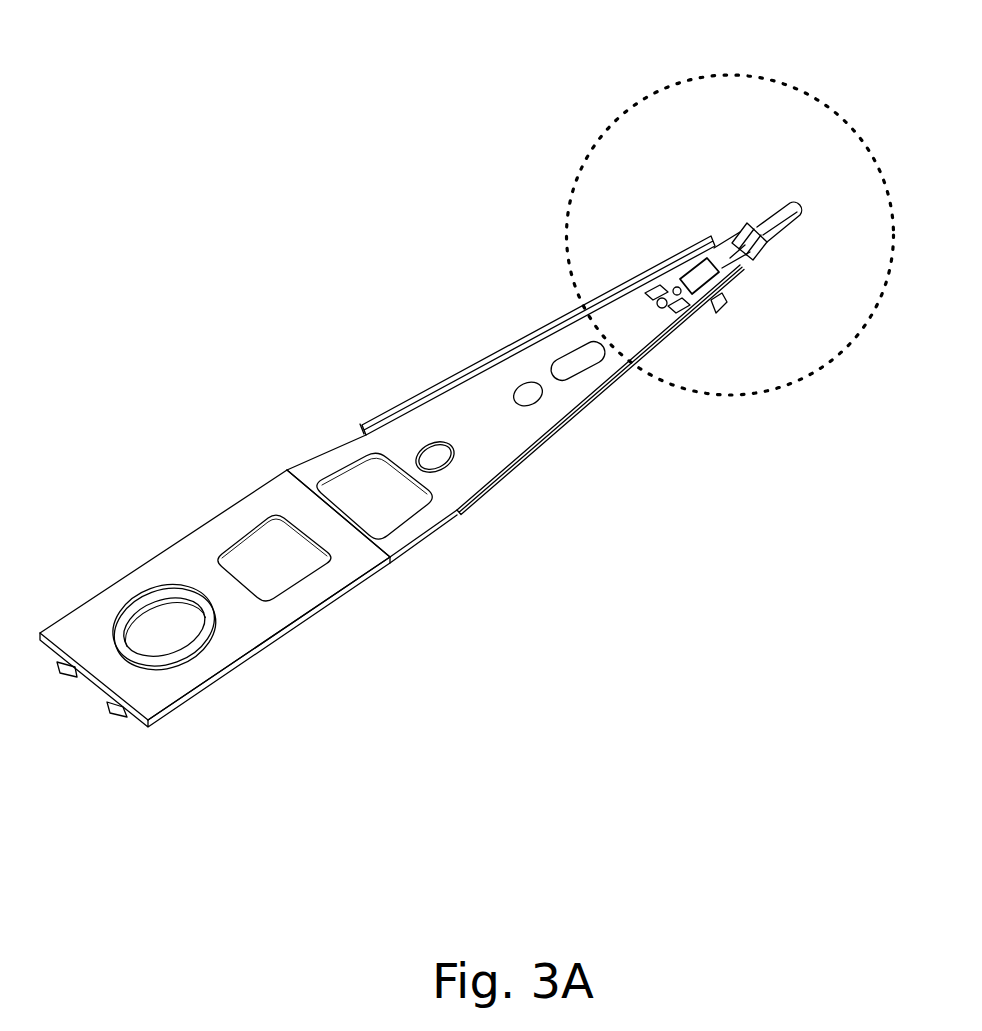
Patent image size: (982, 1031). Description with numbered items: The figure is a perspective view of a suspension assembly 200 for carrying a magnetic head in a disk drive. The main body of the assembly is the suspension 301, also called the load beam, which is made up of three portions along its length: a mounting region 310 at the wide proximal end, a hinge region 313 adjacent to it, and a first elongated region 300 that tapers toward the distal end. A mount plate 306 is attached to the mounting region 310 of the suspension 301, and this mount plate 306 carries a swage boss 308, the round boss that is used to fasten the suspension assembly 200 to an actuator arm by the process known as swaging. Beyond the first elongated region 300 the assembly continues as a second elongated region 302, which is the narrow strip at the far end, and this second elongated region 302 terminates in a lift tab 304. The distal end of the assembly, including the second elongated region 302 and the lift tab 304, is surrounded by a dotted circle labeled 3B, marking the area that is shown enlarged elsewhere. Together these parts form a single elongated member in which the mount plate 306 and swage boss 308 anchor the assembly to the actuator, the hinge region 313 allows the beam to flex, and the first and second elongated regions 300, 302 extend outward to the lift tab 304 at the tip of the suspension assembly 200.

The suspension assembly 200 is at (232, 410).
The first elongated region 300 is at (462, 408).
The suspension 301 is at (472, 477).
The second elongated region 302 is at (737, 238).
The lift tab 304 is at (773, 207).
The mount plate 306 is at (230, 650).
The swage boss 308 is at (139, 592).
The mounting region 310 is at (327, 610).
The hinge region 313 is at (412, 548).
The detail view circle 3B is at (677, 85).